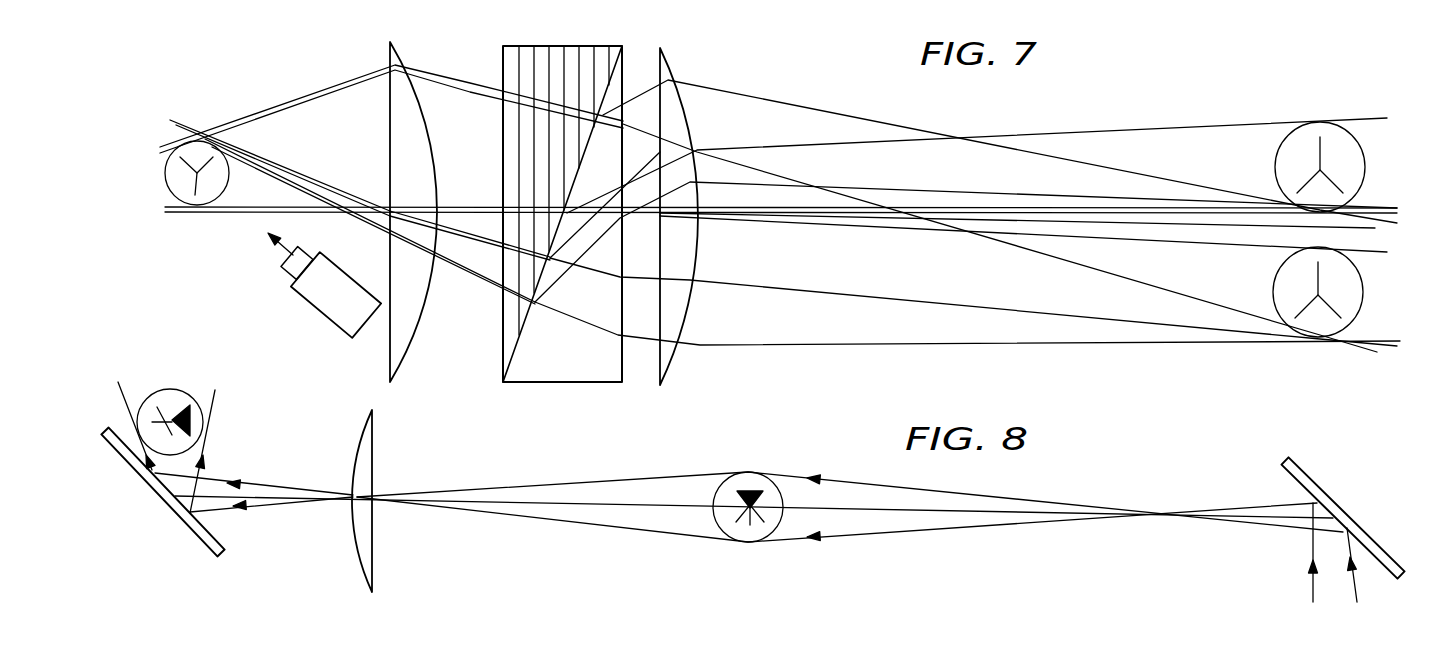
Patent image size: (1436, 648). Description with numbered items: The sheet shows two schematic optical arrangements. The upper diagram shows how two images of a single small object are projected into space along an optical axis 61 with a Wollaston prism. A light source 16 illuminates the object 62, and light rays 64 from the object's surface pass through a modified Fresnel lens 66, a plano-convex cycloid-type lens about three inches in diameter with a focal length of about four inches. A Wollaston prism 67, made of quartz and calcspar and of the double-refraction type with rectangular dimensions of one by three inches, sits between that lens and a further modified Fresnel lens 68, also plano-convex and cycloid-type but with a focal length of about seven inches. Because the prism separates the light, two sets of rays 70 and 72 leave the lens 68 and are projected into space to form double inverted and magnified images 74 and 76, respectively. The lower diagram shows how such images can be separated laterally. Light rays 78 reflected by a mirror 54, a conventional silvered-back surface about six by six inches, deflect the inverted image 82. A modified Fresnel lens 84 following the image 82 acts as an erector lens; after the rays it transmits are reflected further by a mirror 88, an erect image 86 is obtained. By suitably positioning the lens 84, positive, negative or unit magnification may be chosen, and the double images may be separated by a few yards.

In FIG. 7, the light source 16 is at (330, 312).
In FIG. 8, the mirror 54 is at (1308, 480).
In FIG. 7, the optical axis 61 is at (196, 205).
In FIG. 7, the object 62 is at (168, 192).
In FIG. 7, the light rays 64 is at (277, 106).
In FIG. 7, the modified Fresnel lens 66 is at (430, 148).
In FIG. 7, the Wollaston prism 67 is at (550, 373).
In FIG. 7, the further modified Fresnel lens 68 is at (690, 322).
In FIG. 7, the rays 70 is at (900, 121).
In FIG. 7, the rays 72 is at (907, 342).
In FIG. 7, the image 74 is at (1275, 165).
In FIG. 7, the image 76 is at (1272, 285).
In FIG. 8, the light rays 78 is at (1268, 503).
In FIG. 8, the inverted image 82 is at (753, 541).
In FIG. 8, the modified Fresnel lens 84 is at (373, 455).
In FIG. 8, the erect image 86 is at (182, 386).
In FIG. 8, the mirror 88 is at (197, 537).